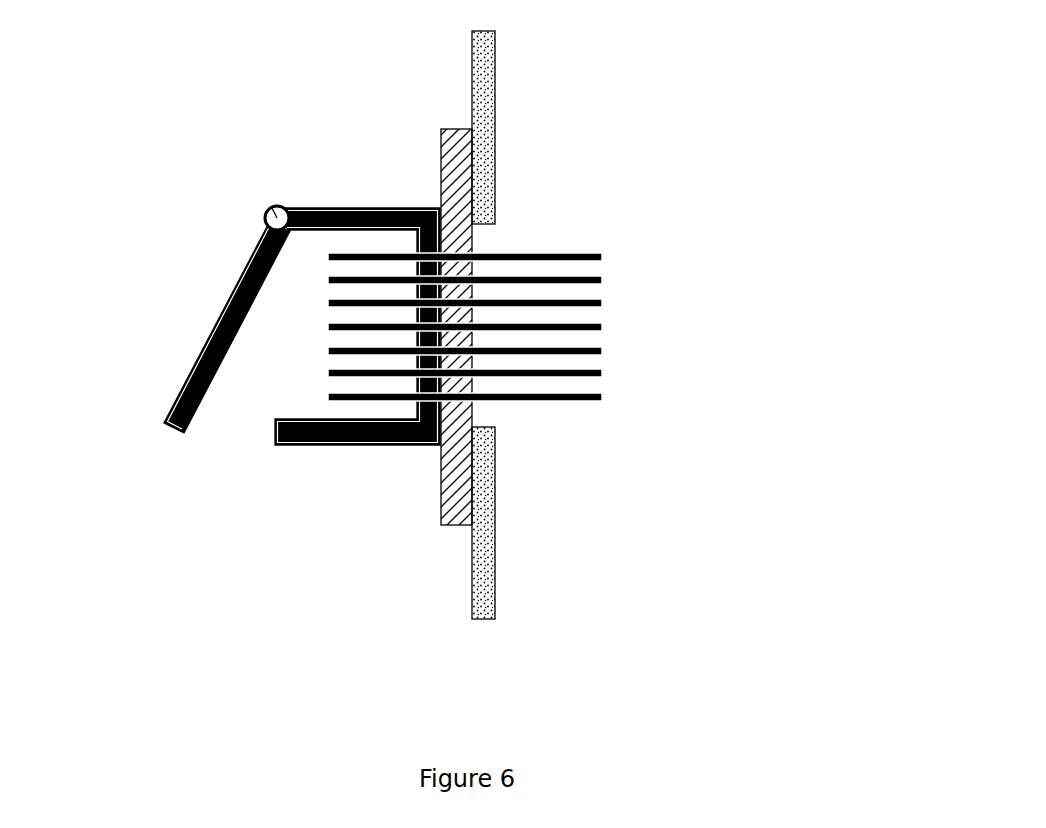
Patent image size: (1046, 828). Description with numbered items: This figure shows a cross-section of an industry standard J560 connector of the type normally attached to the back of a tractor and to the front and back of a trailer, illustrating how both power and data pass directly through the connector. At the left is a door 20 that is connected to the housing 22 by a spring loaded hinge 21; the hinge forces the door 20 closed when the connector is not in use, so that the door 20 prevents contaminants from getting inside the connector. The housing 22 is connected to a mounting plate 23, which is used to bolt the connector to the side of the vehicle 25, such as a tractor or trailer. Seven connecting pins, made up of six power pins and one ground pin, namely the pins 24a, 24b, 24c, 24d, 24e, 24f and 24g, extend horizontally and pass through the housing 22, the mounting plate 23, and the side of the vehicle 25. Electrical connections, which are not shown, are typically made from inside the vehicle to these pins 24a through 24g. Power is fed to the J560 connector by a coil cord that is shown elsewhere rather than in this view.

The door 20 is at (215, 335).
The spring loaded hinge 21 is at (273, 214).
The housing 22 is at (387, 435).
The mounting plate 23 is at (447, 137).
The connecting pin 24a is at (602, 253).
The connecting pin 24b is at (602, 277).
The connecting pin 24c is at (602, 302).
The connecting pin 24d is at (602, 326).
The connecting pin 24e is at (602, 351).
The connecting pin 24f is at (602, 373).
The connecting pin 24g is at (602, 398).
The side of the vehicle 25 is at (495, 57).